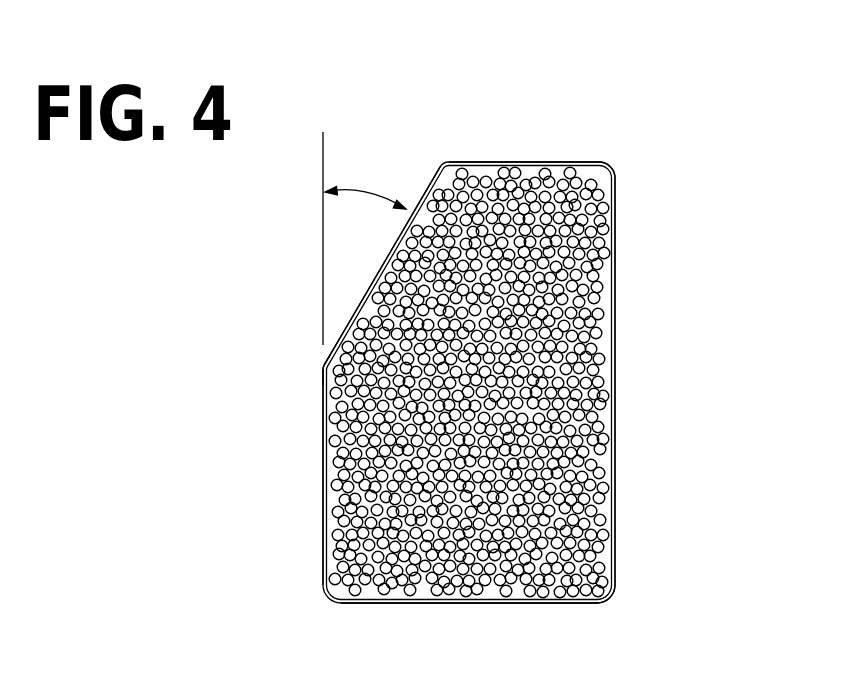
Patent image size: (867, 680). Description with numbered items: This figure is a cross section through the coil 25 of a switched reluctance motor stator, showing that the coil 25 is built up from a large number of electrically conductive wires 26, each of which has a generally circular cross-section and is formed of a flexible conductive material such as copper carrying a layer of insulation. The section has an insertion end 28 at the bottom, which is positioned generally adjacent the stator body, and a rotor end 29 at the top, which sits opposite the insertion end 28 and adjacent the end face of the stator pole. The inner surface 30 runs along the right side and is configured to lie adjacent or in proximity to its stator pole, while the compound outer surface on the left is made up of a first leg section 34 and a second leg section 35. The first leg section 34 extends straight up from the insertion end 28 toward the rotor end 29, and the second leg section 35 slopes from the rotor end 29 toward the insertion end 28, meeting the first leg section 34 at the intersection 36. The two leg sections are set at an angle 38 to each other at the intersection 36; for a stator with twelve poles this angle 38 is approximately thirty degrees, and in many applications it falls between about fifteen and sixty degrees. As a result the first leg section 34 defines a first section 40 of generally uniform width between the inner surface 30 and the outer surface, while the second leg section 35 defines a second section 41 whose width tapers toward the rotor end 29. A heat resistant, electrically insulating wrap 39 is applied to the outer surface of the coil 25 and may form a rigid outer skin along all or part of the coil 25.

The coil 25 is at (652, 73).
The electrically conductive wires 26 is at (630, 396).
The insertion end 28 is at (483, 605).
The rotor end 29 is at (500, 162).
The inner surface 30 is at (616, 313).
The first leg section 34 is at (323, 497).
The second leg section 35 is at (422, 192).
The intersection 36 is at (323, 368).
The angle 38 is at (365, 200).
The insulating wrap 39 is at (616, 180).
The first section 40 is at (649, 570).
The second section 41 is at (652, 246).